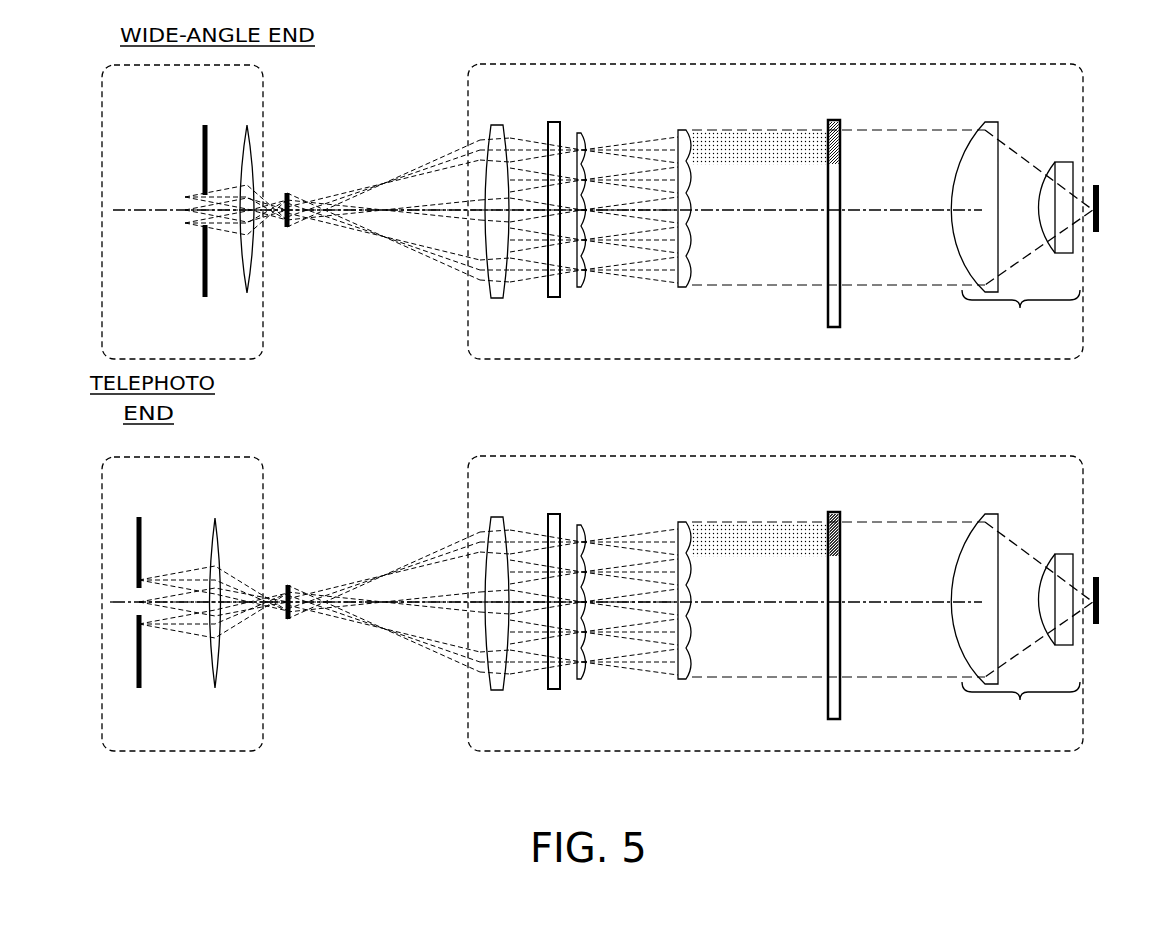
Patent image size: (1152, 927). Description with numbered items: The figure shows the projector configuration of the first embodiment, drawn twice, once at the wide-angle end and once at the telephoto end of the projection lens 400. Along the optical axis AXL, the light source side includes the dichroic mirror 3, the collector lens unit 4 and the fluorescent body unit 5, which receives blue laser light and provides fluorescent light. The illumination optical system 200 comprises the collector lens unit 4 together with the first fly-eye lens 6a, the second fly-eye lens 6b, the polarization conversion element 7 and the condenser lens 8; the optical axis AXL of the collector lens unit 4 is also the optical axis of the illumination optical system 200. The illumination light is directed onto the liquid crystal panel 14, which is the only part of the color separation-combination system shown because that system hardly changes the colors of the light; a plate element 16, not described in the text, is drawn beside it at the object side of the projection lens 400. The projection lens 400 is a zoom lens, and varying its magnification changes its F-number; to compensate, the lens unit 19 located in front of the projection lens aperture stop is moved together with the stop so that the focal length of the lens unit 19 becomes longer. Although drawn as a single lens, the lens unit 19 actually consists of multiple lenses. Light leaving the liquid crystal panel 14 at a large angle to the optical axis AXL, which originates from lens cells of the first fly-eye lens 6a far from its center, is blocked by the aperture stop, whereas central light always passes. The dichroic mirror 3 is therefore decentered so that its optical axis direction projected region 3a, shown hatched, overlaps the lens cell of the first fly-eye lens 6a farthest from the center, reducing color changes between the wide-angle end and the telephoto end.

The dichroic mirror 3 is at (840, 313).
The optical axis direction projected region 3a is at (832, 158).
The collector lens unit 4 is at (1020, 700).
The fluorescent body unit 5 is at (1097, 233).
The first fly-eye lens 6a is at (683, 288).
The second fly-eye lens 6b is at (598, 526).
The polarization conversion element 7 is at (546, 298).
The condenser lens 8 is at (495, 298).
The liquid crystal panel 14 is at (289, 228).
The image forming element / slit plate 16 is at (205, 297).
The lens unit 19 is at (222, 516).
The illumination optical system 200 is at (873, 458).
The projection lens 400 is at (102, 352).
The optical axis AXL is at (762, 603).